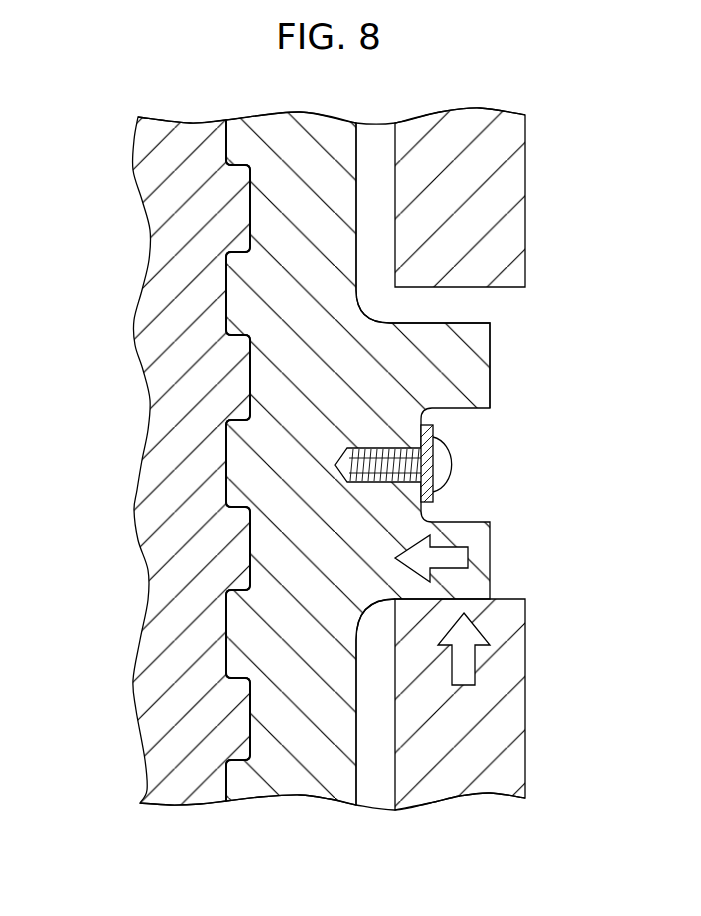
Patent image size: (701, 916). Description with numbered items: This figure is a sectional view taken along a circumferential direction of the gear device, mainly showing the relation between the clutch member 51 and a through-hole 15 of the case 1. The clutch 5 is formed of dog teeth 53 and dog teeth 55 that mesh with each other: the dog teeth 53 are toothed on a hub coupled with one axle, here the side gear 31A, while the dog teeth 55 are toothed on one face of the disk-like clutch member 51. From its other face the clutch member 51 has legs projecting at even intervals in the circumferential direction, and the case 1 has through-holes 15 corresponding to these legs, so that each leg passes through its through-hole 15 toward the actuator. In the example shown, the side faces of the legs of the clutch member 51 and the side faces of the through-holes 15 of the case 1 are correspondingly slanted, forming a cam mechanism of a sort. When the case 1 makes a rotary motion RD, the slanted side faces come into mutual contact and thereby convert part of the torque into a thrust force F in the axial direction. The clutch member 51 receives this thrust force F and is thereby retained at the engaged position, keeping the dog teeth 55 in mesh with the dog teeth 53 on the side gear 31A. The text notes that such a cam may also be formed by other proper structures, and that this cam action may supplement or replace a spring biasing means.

The case 1 is at (484, 459).
The through-hole 15 is at (507, 599).
The clutch 5 is at (152, 460).
The dog teeth 53 is at (252, 562).
The dog teeth 55 is at (229, 458).
The side gear 31A is at (186, 766).
The clutch member 51 is at (300, 768).
The thrust force F is at (448, 546).
The rotary motion RD is at (462, 686).